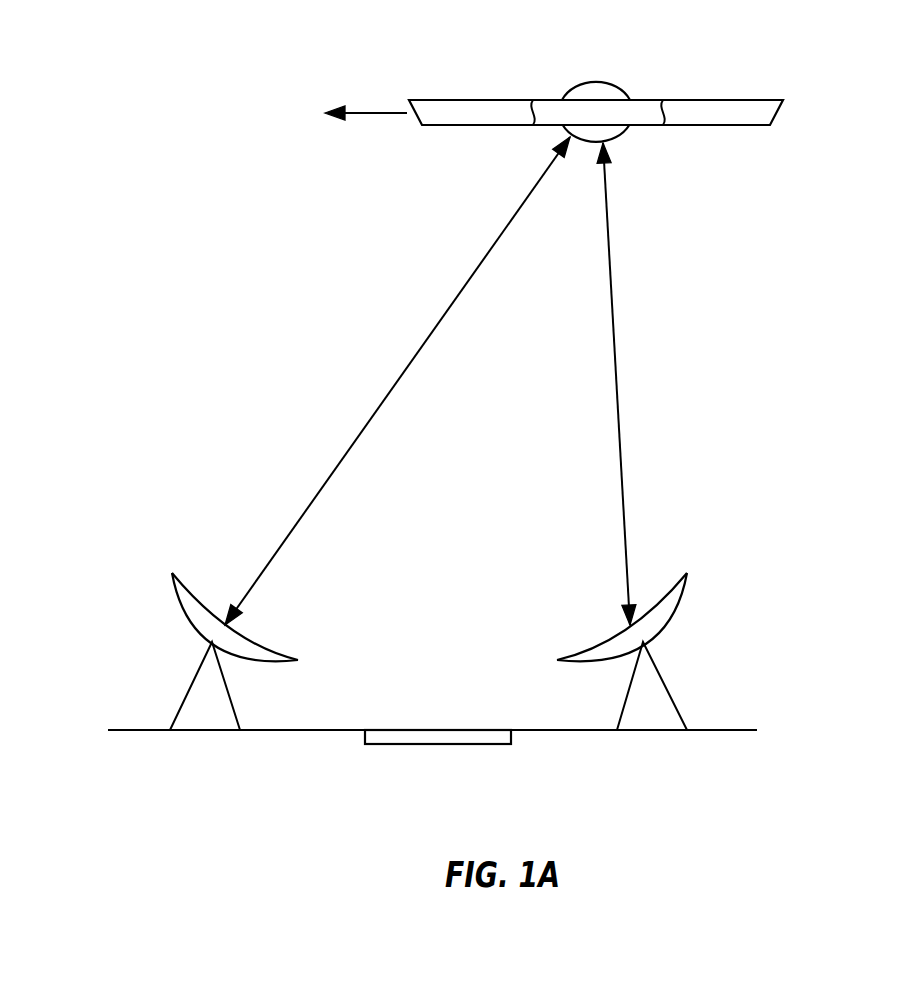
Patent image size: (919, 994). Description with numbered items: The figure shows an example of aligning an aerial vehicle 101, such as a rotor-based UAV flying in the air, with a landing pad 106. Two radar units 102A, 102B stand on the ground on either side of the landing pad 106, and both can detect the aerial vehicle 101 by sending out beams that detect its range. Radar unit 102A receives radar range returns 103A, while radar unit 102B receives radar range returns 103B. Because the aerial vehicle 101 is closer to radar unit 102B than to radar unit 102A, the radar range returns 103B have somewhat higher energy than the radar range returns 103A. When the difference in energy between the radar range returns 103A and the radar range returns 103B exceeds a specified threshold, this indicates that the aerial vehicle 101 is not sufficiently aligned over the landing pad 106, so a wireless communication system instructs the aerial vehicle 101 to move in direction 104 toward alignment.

The aerial vehicle 101 is at (767, 113).
The radar unit 102A is at (200, 622).
The radar unit 102B is at (660, 618).
The radar range returns 103A is at (373, 410).
The radar range returns 103B is at (618, 385).
The direction 104 is at (365, 110).
The landing pad 106 is at (475, 738).